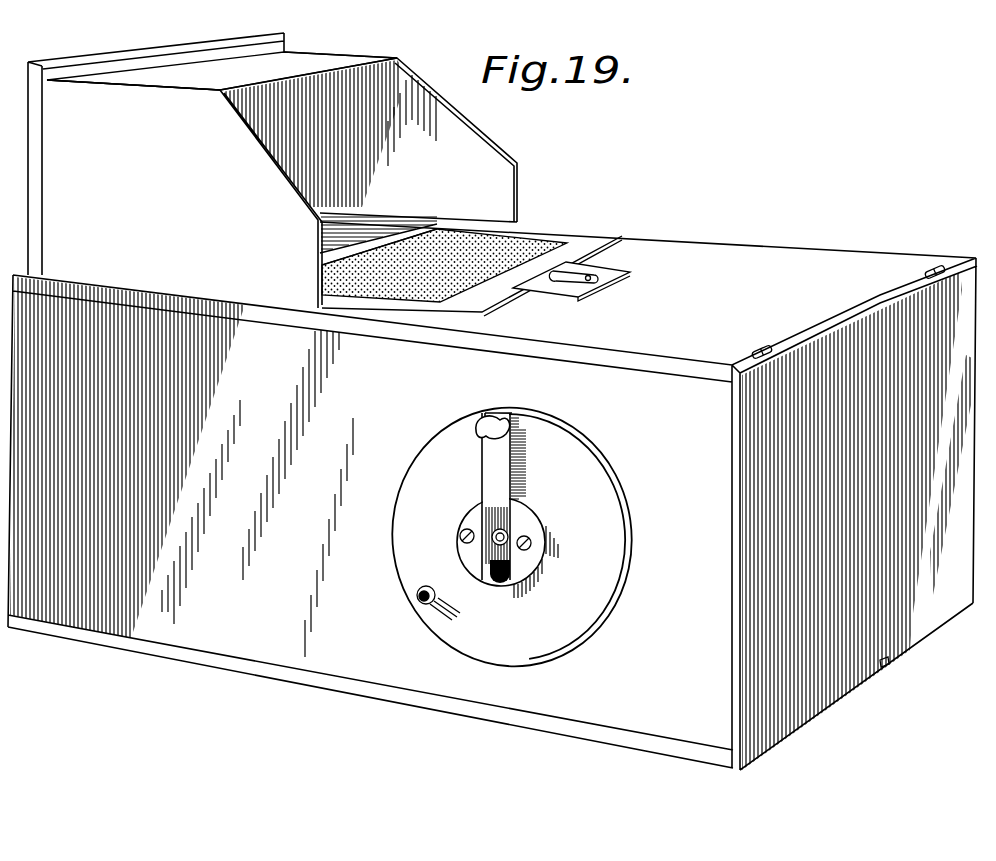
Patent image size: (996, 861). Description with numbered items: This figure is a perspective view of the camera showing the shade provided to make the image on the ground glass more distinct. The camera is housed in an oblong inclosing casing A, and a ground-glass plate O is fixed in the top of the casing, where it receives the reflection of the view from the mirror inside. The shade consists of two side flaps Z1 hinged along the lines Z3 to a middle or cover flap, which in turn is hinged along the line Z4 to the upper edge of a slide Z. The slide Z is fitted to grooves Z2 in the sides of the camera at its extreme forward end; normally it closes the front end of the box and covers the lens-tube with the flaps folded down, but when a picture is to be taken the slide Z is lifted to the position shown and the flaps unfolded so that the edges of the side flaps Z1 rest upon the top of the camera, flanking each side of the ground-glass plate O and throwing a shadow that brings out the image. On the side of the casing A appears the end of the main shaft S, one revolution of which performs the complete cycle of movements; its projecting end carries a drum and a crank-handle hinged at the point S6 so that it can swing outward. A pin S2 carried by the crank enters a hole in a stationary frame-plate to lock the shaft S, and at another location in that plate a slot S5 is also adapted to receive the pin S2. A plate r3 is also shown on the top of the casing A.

The inclosing casing A is at (492, 496).
The slide Z is at (87, 57).
The side flaps Z1 is at (488, 137).
The grooves Z2 is at (184, 194).
The hinge lines Z3 is at (323, 48).
The hinge line Z4 is at (255, 57).
The ground-glass plate O is at (517, 245).
The cover plate r3 is at (593, 277).
The main shaft S is at (485, 550).
The pin S2 is at (490, 468).
The slot S5 is at (424, 604).
The hinge point S6 is at (520, 500).